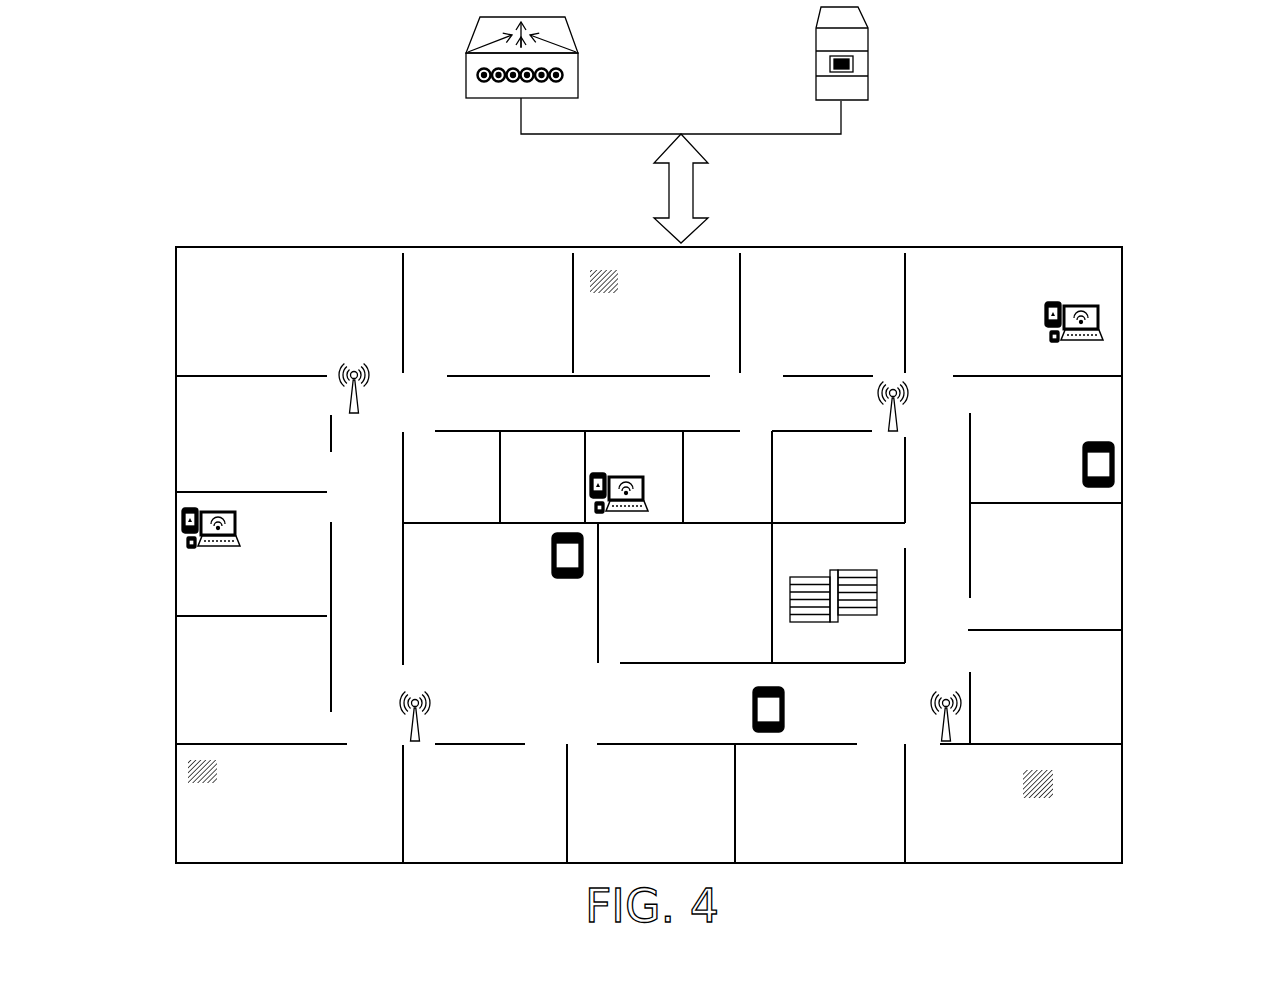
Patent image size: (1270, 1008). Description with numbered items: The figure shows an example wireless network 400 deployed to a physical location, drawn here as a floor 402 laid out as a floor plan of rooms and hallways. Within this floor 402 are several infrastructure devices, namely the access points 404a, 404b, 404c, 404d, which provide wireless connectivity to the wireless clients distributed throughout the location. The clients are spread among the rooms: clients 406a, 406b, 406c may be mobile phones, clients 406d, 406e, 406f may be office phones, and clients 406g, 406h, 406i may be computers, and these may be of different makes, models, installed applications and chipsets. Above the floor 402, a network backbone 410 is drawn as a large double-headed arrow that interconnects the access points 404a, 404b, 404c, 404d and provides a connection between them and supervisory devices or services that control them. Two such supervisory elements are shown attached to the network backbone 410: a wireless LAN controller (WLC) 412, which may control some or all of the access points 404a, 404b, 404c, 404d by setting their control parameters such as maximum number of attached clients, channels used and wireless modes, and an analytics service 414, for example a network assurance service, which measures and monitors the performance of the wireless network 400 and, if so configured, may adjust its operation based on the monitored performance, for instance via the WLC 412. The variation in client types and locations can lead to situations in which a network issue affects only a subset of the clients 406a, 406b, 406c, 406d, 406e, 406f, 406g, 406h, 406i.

The wireless network 400 is at (1183, 77).
The floor 402 is at (185, 873).
The access point 404a is at (327, 358).
The access point 404b is at (913, 410).
The access point 404c is at (388, 692).
The access point 404d is at (942, 683).
The client 406a is at (790, 712).
The client 406b is at (562, 590).
The client 406c is at (1068, 455).
The client 406d is at (620, 310).
The client 406e is at (217, 798).
The client 406f is at (1032, 810).
The client 406g is at (208, 560).
The client 406h is at (657, 498).
The client 406i is at (1035, 322).
The network backbone 410 is at (655, 191).
The wireless LAN controller (WLC) 412 is at (452, 52).
The analytics service 414 is at (860, 112).